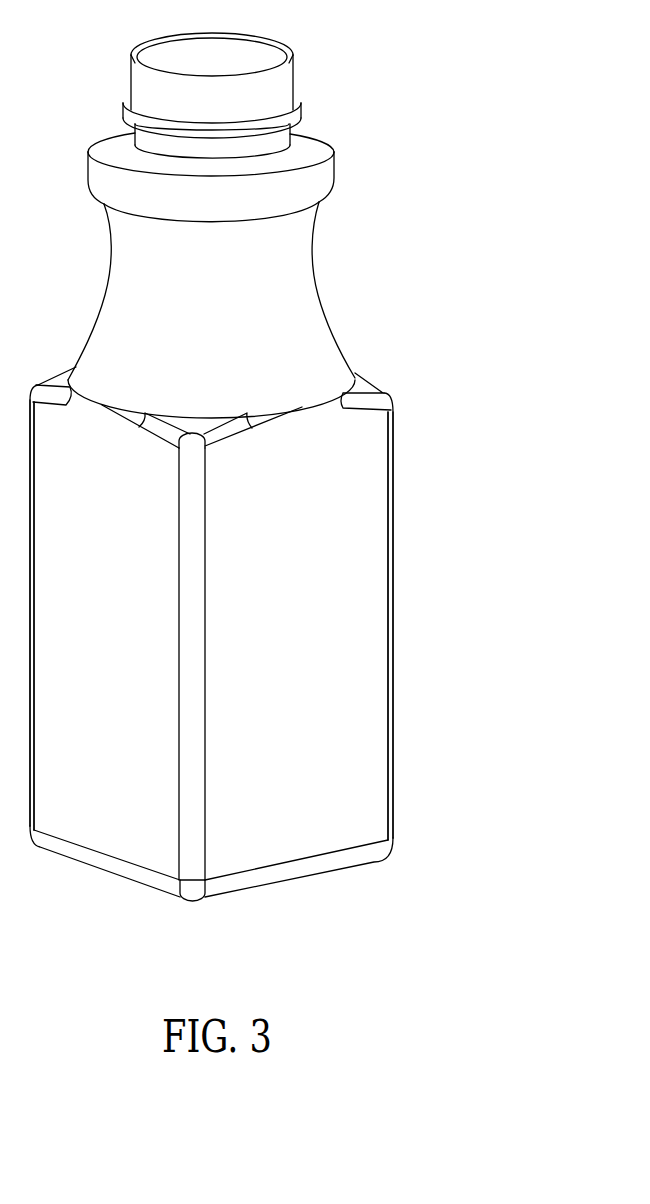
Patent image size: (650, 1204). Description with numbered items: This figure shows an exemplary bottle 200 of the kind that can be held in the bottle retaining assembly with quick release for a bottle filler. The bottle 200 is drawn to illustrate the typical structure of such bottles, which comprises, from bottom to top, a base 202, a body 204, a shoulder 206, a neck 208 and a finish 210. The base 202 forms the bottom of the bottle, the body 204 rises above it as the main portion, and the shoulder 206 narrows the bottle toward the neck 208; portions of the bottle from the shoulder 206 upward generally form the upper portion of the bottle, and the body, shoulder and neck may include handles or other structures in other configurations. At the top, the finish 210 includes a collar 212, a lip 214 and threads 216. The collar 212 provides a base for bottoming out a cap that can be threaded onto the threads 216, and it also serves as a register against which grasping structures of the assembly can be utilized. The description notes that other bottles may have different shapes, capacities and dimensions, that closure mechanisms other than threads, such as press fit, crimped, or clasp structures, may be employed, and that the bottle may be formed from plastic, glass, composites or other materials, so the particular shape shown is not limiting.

The bottle 200 is at (488, 452).
The base 202 is at (309, 884).
The body 204 is at (365, 630).
The shoulder 206 is at (356, 375).
The neck 208 is at (312, 242).
The finish 210 is at (334, 158).
The collar 212 is at (300, 145).
The lip 214 is at (142, 47).
The threads 216 is at (123, 110).